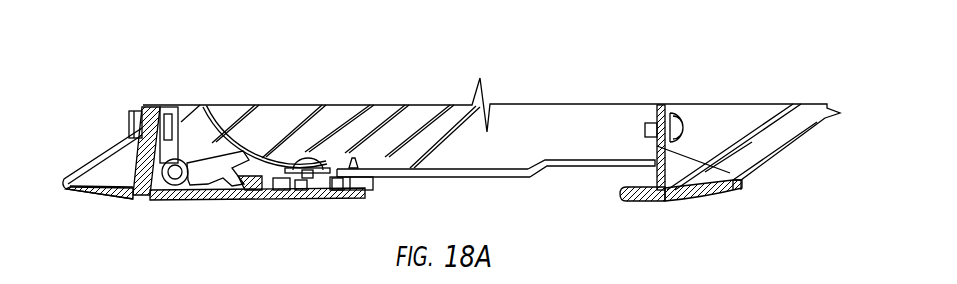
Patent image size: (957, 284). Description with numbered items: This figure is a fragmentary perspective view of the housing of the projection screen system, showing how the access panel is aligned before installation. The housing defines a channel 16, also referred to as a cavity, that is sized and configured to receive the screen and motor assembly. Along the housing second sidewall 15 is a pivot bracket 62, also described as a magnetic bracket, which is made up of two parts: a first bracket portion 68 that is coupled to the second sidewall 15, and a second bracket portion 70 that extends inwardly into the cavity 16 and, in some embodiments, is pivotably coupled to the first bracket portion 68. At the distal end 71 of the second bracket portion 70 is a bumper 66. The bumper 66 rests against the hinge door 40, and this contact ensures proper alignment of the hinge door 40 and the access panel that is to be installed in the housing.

The second sidewall 15 is at (670, 108).
The channel 16 is at (577, 126).
The hinge door 40 is at (325, 200).
The pivot bracket 62 is at (541, 185).
The bumper 66 is at (366, 183).
The first bracket portion 68 is at (660, 147).
The second bracket portion 70 is at (500, 177).
The distal end 71 is at (378, 150).